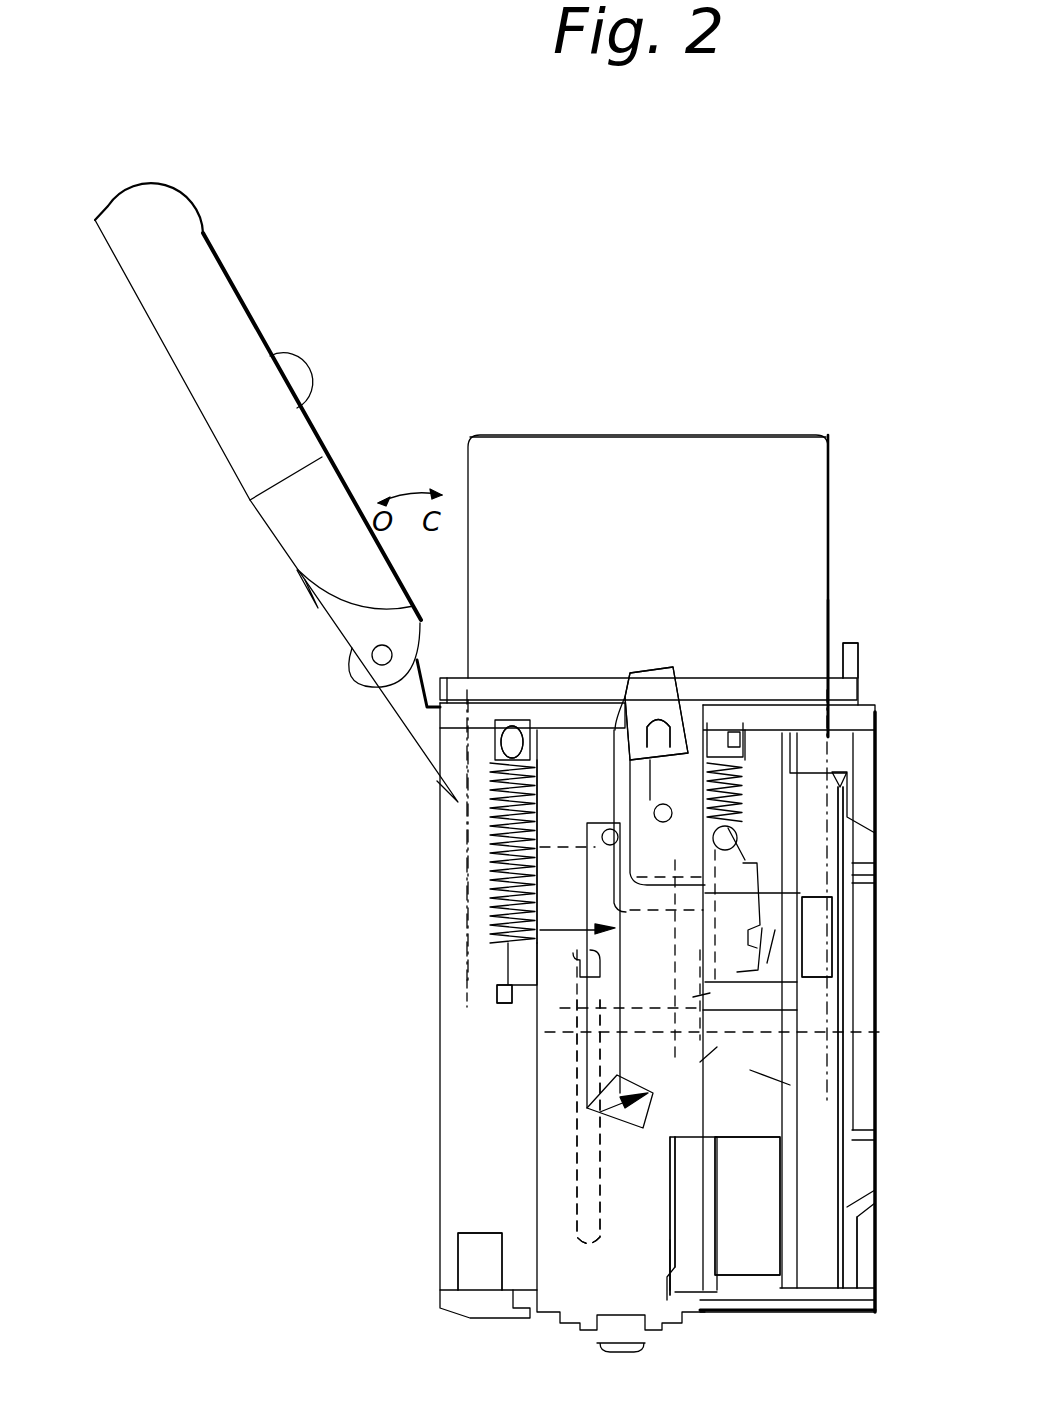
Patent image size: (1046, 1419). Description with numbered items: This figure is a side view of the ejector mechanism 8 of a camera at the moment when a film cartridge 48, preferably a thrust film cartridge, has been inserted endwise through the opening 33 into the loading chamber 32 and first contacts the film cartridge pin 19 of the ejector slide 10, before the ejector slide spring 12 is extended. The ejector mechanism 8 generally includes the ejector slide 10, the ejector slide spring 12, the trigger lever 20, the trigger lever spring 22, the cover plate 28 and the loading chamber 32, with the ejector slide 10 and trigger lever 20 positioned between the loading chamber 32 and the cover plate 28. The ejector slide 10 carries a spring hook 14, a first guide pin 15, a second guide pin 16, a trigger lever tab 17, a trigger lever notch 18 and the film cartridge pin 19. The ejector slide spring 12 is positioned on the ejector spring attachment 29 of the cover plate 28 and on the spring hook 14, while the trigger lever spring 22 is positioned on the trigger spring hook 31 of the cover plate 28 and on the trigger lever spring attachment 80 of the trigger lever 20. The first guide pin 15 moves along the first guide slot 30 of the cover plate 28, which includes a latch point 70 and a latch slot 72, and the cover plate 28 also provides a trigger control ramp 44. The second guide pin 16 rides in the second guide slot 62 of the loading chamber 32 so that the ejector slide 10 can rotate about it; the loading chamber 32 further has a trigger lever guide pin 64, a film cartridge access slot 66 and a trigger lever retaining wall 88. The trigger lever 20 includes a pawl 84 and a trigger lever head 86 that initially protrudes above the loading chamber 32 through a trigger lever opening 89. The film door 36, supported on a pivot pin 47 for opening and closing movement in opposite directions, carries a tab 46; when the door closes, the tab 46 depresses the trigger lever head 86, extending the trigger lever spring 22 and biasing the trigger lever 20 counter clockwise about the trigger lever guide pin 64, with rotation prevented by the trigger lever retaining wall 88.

The ejector mechanism 8 is at (152, 900).
The ejector slide 10 is at (553, 887).
The ejector slide spring 12 is at (490, 820).
The spring hook 14 is at (512, 1002).
The first guide pin 15 is at (610, 823).
The second guide pin 16 is at (535, 972).
The trigger lever tab 17 is at (710, 907).
The trigger lever notch 18 is at (693, 997).
The film cartridge pin 19 is at (700, 1062).
The trigger lever 20 is at (700, 700).
The trigger lever spring 22 is at (747, 780).
The cover plate 28 is at (641, 1203).
The ejector spring attachment 29 is at (510, 740).
The first guide slot 30 is at (490, 928).
The trigger spring hook 31 is at (848, 652).
The loading chamber 32 is at (505, 1180).
The opening 33 is at (565, 640).
The film door 36 is at (170, 260).
The trigger control ramp 44 is at (778, 934).
The tab 46 is at (300, 378).
The pivot pin 47 is at (377, 660).
The film cartridge 48 is at (663, 460).
The second guide slot 62 is at (593, 1192).
The trigger lever guide pin 64 is at (745, 720).
The film cartridge access slot 66 is at (780, 1080).
The latch point 70 is at (617, 1075).
The latch slot 72 is at (622, 1093).
The trigger lever spring attachment 80 is at (702, 818).
The pawl 84 is at (745, 1175).
The trigger lever head 86 is at (657, 697).
The trigger lever retaining wall 88 is at (765, 1200).
The trigger lever opening 89 is at (668, 805).